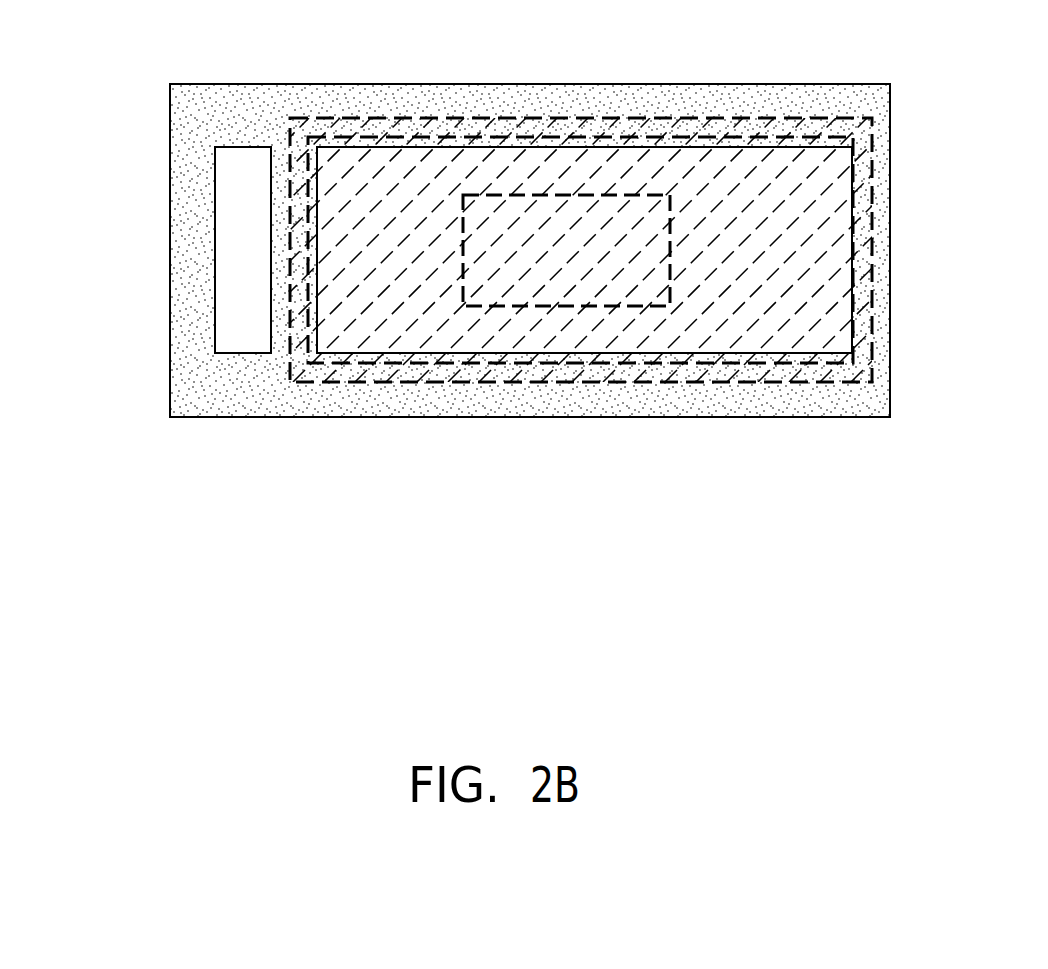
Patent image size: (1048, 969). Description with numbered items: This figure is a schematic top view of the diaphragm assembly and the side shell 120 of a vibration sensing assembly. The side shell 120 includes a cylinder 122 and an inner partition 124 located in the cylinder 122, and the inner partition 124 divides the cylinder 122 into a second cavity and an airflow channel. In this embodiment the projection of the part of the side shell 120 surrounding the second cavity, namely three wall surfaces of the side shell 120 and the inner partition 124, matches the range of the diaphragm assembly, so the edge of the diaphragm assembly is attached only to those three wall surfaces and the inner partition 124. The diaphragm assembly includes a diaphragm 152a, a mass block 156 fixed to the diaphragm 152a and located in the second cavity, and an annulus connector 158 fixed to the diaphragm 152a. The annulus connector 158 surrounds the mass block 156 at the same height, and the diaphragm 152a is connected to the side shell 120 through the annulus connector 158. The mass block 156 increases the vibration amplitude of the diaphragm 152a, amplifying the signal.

The side shell 120 is at (302, 502).
The cylinder 122 is at (563, 108).
The inner partition 124 is at (313, 322).
The diaphragm 152a is at (803, 246).
The mass block 156 is at (553, 305).
The annulus connector 158 is at (668, 382).